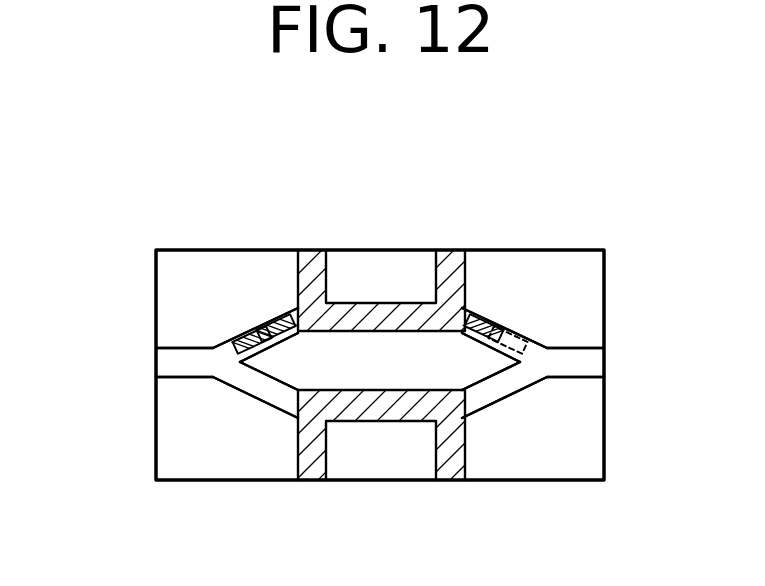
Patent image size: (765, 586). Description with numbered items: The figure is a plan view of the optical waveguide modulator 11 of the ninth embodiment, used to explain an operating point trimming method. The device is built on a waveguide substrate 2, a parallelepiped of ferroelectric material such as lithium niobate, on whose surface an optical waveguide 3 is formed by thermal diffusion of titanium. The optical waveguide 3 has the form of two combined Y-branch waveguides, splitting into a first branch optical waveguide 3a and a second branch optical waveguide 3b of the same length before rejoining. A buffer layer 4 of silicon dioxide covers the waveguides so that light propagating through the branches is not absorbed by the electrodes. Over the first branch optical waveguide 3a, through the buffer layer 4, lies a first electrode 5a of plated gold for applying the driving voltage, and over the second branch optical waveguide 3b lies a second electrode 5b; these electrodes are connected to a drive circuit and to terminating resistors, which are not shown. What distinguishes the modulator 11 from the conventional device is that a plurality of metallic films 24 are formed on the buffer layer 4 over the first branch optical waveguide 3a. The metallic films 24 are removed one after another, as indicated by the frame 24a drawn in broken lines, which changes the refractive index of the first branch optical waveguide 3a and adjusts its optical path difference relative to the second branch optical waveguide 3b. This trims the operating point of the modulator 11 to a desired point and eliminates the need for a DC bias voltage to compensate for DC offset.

The optical waveguide modulator 11 is at (396, 235).
The waveguide substrate 2 is at (568, 478).
The optical waveguide 3 is at (180, 346).
The first branch optical waveguide 3a is at (222, 338).
The second branch optical waveguide 3b is at (256, 404).
The buffer layer 4 is at (198, 424).
The first electrode 5a is at (358, 302).
The second electrode 5b is at (380, 421).
The metallic film 24 is at (265, 308).
The frame 24a is at (519, 313).